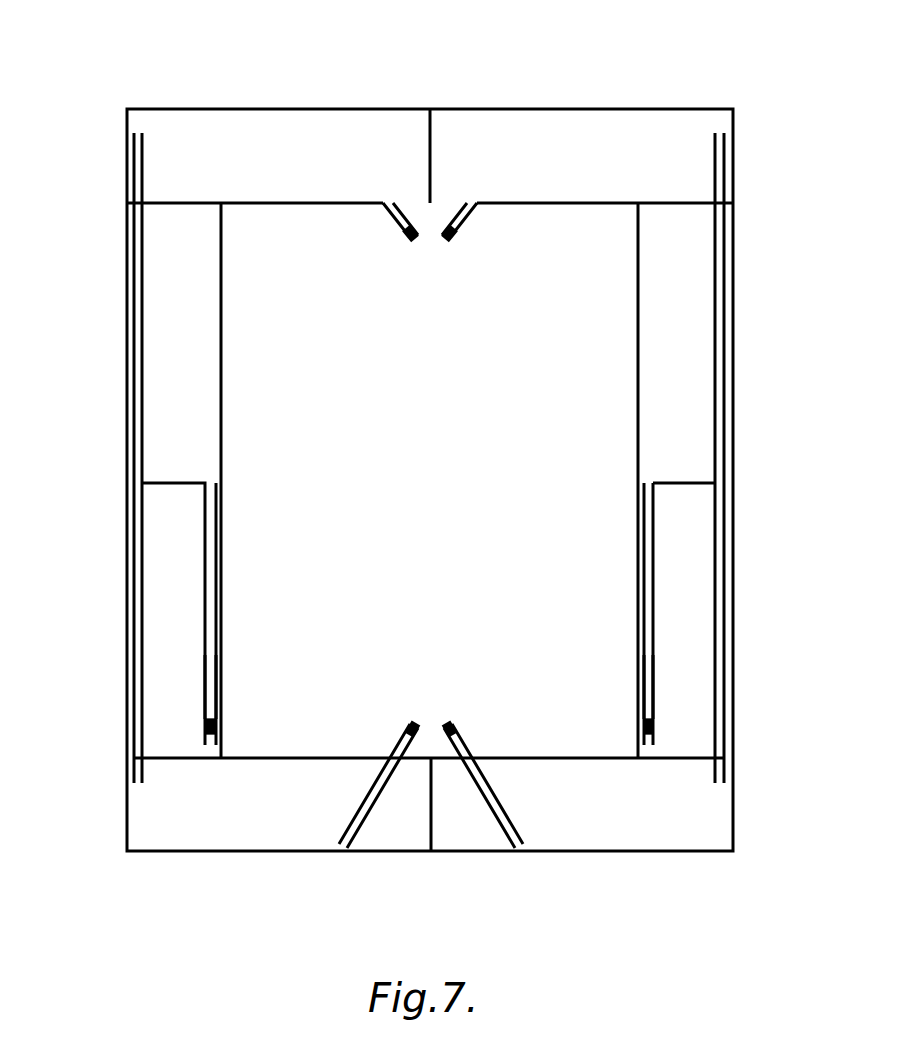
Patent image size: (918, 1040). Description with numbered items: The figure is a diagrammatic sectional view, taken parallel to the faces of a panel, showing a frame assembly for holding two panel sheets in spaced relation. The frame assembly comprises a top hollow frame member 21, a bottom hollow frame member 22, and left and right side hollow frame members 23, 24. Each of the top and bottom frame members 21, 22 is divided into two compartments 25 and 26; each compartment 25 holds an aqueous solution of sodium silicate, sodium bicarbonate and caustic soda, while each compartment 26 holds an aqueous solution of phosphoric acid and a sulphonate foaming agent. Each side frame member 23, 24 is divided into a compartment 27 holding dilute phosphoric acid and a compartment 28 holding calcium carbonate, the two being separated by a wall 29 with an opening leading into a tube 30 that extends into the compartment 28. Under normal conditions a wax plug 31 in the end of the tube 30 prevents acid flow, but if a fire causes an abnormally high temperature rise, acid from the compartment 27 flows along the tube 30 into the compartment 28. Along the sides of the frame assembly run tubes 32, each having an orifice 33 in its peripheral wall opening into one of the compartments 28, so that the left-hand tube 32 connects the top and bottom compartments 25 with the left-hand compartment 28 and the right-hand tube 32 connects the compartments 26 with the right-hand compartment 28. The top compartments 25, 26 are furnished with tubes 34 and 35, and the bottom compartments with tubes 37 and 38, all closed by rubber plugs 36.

The top hollow frame member 21 is at (705, 107).
The bottom hollow frame member 22 is at (718, 852).
The side hollow frame member 23 is at (127, 630).
The side hollow frame member 24 is at (733, 628).
The compartment 25 is at (206, 145).
The compartment 26 is at (500, 145).
The compartment 27 is at (180, 415).
The compartment 28 is at (175, 560).
The wall 29 is at (676, 483).
The tube 30 is at (207, 655).
The wax plug 31 is at (207, 725).
The tube 32 is at (138, 311).
The orifice 33 is at (143, 497).
The tube 34 is at (393, 215).
The tube 35 is at (467, 215).
The rubber plug 36 is at (450, 240).
The tube 37 is at (383, 782).
The tube 38 is at (478, 782).